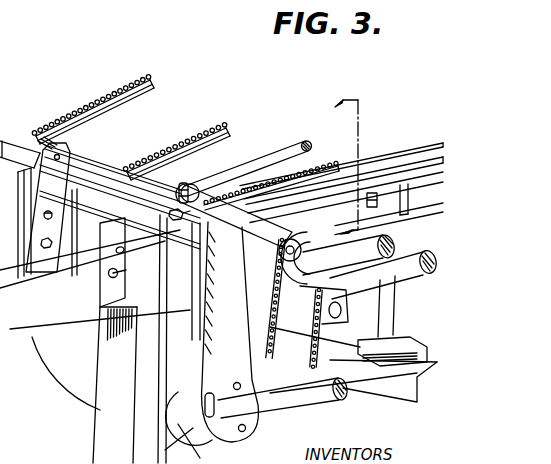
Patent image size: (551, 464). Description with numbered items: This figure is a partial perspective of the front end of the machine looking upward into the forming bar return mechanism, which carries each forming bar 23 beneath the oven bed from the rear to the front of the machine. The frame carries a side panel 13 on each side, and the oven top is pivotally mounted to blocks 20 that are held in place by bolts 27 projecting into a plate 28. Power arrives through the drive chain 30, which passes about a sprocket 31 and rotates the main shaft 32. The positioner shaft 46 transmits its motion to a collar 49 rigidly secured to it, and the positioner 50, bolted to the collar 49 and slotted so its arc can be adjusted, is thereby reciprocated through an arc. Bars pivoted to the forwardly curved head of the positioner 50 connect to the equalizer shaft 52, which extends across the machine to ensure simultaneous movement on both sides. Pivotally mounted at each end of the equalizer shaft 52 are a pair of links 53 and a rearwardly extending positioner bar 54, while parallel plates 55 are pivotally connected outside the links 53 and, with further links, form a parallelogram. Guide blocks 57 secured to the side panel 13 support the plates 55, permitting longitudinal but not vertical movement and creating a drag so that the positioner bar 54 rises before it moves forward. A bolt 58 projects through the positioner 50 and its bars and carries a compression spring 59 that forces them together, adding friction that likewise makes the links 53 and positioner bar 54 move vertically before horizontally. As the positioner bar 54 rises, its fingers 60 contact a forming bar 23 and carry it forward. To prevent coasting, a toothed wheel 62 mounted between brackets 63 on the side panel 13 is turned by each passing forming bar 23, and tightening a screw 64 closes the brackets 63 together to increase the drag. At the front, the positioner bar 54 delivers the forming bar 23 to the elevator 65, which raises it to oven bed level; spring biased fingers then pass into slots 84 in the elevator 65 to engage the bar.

The side panel 13 is at (52, 305).
The block 20 is at (95, 173).
The forming bar 23 is at (152, 82).
The bolt 27 is at (20, 139).
The plate 28 is at (15, 183).
The drive chain 30 is at (335, 368).
The sprocket 31 is at (338, 298).
The main shaft 32 is at (392, 268).
The positioner shaft 46 is at (306, 398).
The collar 49 is at (190, 420).
The positioner 50 is at (205, 408).
The equalizer shaft 52 is at (268, 157).
The link 53 is at (171, 210).
The positioner bar 54 is at (97, 172).
The parallel plate 55 is at (98, 248).
The guide block 57 is at (265, 240).
The bolt 58 is at (310, 229).
The compression spring 59 is at (287, 236).
The finger 60 is at (120, 207).
The toothed wheel 62 is at (70, 150).
The bracket 63 is at (42, 250).
The screw 64 is at (44, 216).
The elevator 65 is at (428, 200).
The slot 84 is at (373, 195).